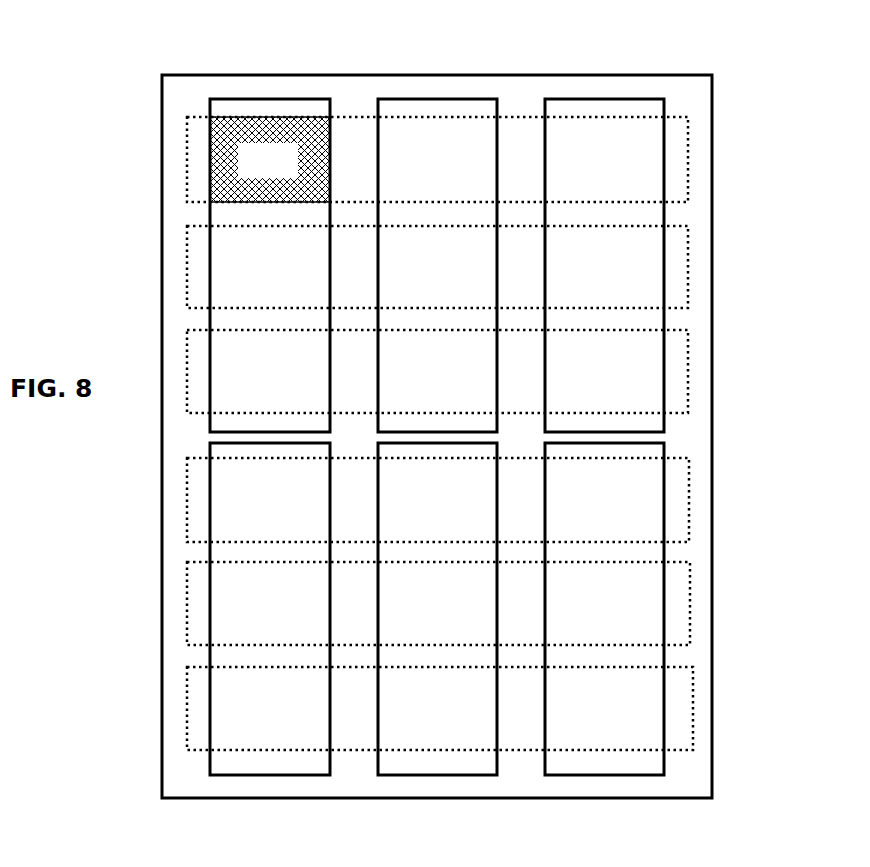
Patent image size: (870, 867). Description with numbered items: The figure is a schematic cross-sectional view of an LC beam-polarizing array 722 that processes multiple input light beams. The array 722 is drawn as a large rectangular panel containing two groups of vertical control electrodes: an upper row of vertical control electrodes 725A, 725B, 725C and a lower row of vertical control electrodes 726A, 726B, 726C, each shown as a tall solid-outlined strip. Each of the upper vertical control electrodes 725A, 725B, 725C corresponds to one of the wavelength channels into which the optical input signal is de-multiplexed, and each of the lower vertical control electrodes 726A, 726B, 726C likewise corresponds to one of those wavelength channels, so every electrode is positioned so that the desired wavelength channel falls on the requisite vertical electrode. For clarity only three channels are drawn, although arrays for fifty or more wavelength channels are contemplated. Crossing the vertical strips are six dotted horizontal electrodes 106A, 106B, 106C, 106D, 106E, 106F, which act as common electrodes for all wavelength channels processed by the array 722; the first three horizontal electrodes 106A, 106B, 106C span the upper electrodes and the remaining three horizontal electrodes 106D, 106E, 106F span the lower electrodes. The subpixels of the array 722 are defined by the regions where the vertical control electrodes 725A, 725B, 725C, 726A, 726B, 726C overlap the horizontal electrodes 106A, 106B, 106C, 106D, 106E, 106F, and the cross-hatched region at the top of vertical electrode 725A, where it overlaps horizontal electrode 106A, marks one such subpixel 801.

The LC beam-polarizing array 722 is at (185, 75).
The vertical control electrode 725A is at (233, 99).
The vertical control electrode 725B is at (402, 99).
The vertical control electrode 725C is at (570, 99).
The vertical control electrode 726A is at (233, 775).
The vertical control electrode 726B is at (407, 775).
The vertical control electrode 726C is at (572, 775).
The subpixel 801 is at (270, 159).
The horizontal electrode 106A is at (688, 175).
The horizontal electrode 106B is at (688, 290).
The horizontal electrode 106C is at (688, 385).
The horizontal electrode 106D is at (689, 500).
The horizontal electrode 106E is at (690, 608).
The horizontal electrode 106F is at (693, 722).